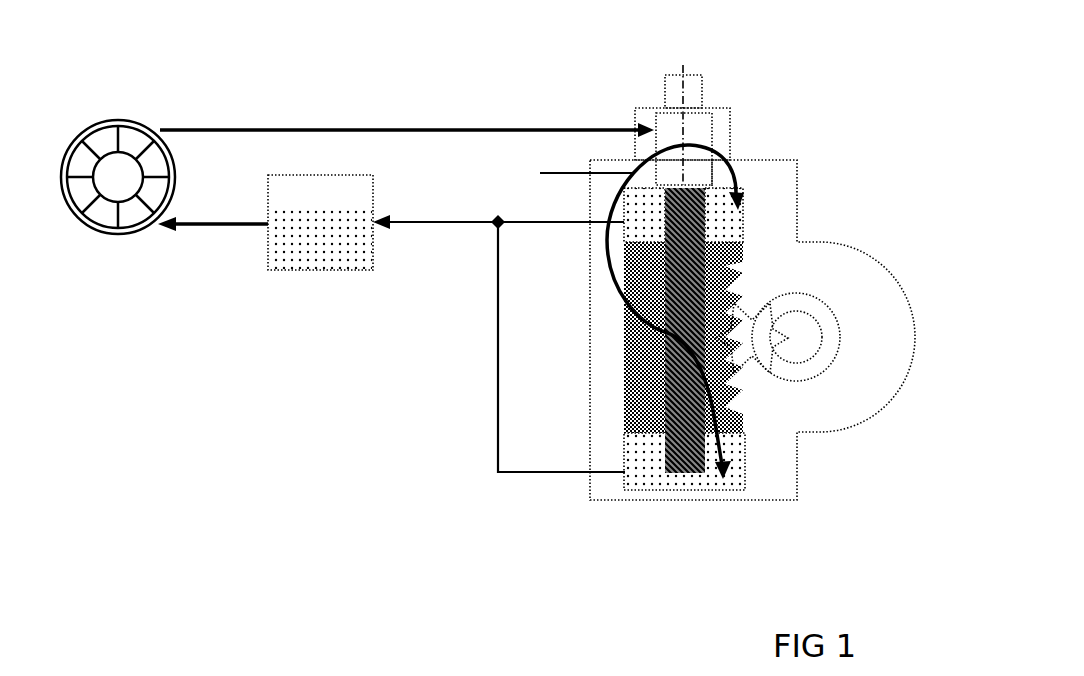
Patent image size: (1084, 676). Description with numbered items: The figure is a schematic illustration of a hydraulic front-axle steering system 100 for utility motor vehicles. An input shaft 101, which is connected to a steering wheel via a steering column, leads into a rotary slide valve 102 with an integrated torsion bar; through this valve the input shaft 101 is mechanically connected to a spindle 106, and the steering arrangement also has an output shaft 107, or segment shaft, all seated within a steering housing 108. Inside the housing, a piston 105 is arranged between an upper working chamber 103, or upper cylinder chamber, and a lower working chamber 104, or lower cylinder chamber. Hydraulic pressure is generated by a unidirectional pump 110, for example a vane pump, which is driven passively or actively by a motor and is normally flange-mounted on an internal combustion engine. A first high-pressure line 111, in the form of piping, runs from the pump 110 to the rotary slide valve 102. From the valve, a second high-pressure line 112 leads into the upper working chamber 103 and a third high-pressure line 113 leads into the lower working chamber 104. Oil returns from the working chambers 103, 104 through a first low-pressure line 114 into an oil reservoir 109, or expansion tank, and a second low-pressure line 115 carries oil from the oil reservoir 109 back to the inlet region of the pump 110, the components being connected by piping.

The hydraulic front-axle steering system 100 is at (160, 54).
The input shaft 101 is at (693, 82).
The rotary slide valve 102 is at (702, 127).
The upper working chamber 103 is at (723, 220).
The lower working chamber 104 is at (727, 450).
The piston 105 is at (647, 282).
The spindle 106 is at (668, 438).
The output shaft 107 is at (817, 318).
The steering housing 108 is at (847, 397).
The oil reservoir 109 is at (327, 253).
The unidirectional pump 110 is at (93, 215).
The first high-pressure line 111 is at (498, 130).
The second high-pressure line 112 is at (730, 160).
The third high-pressure line 113 is at (557, 174).
The first low-pressure line 114 is at (525, 472).
The second low-pressure line 115 is at (203, 225).